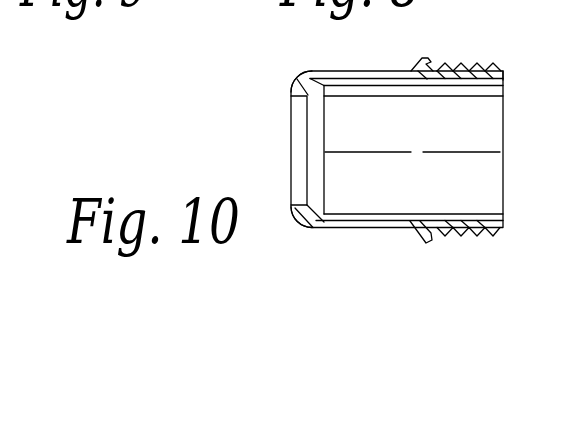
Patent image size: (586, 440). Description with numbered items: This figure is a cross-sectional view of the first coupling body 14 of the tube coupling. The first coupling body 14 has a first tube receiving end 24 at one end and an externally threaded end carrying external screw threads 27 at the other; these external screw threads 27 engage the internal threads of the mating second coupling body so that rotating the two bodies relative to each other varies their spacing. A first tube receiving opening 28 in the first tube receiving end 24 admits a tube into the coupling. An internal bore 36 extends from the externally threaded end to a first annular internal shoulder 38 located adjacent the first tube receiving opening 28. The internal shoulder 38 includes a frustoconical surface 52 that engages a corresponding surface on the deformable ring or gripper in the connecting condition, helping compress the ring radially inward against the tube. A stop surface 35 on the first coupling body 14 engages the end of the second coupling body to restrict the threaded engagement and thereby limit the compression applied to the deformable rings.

The first coupling body 14 is at (256, 170).
The first tube receiving end 24 is at (302, 208).
The external screw threads 27 is at (466, 62).
The first tube receiving opening 28 is at (292, 132).
The stop surface 35 is at (432, 235).
The internal bore 36 is at (470, 145).
The first annular internal shoulder 38 is at (325, 212).
The frustoconical surface 52 is at (324, 119).